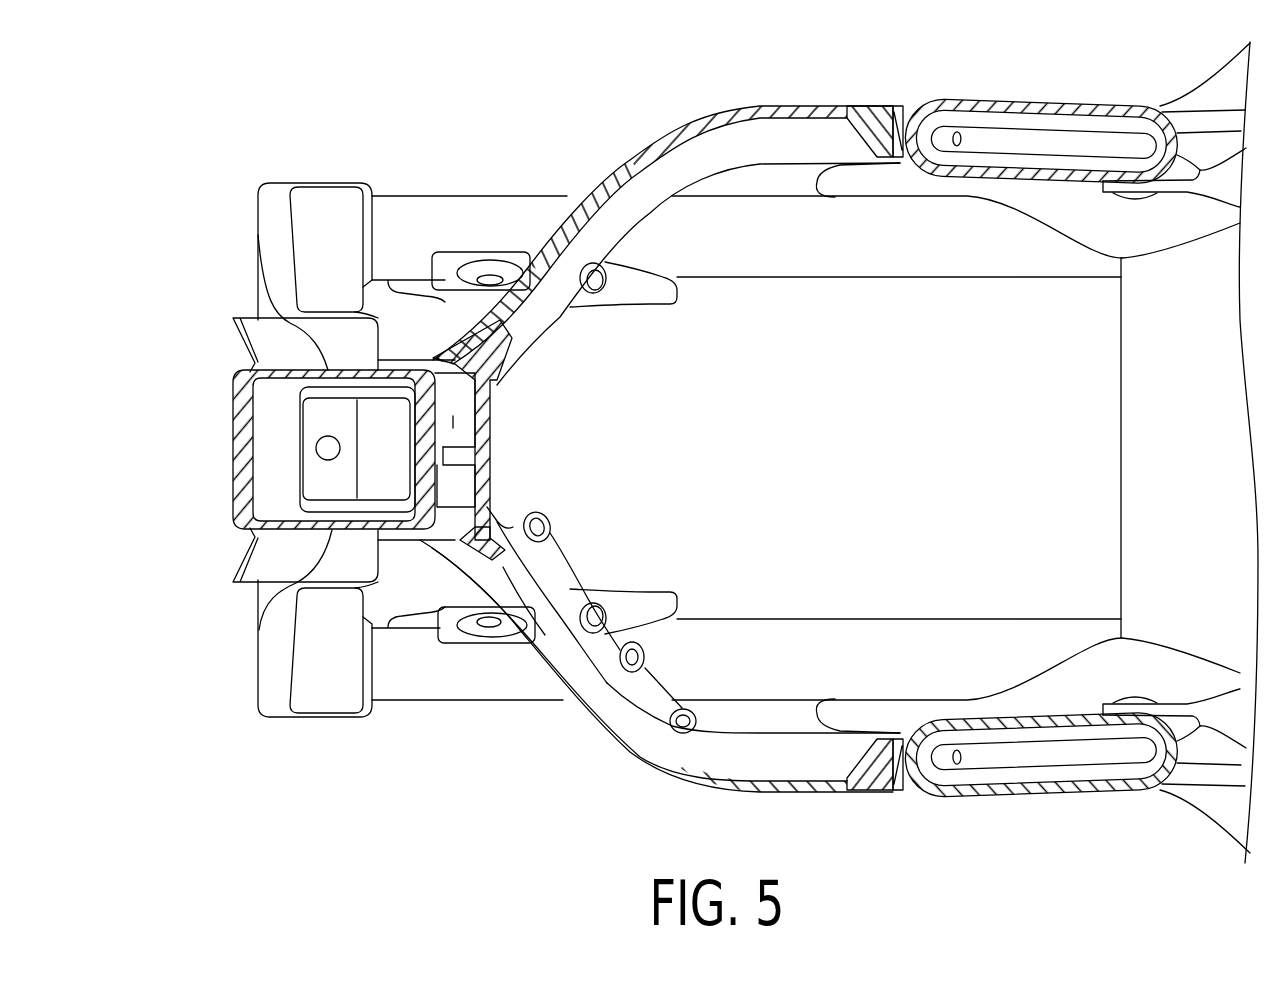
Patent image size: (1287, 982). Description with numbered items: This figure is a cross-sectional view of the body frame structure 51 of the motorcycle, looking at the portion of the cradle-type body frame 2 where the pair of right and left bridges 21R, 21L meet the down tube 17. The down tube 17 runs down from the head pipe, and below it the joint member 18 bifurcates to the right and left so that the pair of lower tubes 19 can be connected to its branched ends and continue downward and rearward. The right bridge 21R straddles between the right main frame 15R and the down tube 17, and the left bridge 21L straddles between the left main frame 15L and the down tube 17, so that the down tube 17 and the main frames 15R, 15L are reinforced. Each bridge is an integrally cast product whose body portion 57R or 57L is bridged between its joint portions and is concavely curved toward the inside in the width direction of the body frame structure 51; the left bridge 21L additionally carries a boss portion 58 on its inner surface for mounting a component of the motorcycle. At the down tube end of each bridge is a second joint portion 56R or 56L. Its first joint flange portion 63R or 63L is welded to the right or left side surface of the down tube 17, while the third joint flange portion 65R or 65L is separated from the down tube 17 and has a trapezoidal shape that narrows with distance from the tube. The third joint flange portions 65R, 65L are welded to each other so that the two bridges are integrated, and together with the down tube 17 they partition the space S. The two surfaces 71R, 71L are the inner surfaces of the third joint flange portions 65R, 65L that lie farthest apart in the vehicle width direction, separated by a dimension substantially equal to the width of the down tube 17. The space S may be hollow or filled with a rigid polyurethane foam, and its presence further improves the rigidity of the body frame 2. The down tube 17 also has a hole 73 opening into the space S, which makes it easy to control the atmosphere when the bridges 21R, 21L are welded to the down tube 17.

The body frame 2 is at (988, 80).
The right main frame 15R is at (1050, 100).
The left main frame 15L is at (1050, 798).
The down tube 17 is at (232, 410).
The joint member 18 is at (305, 182).
The lower tube 19 is at (876, 279).
The right bridge 21R is at (762, 101).
The left bridge 21L is at (763, 794).
The body frame structure 51 is at (556, 152).
The second joint portion 56R is at (453, 340).
The second joint portion 56L is at (453, 638).
The body portion 57R is at (650, 214).
The body portion 57L is at (580, 600).
The boss portion 58 is at (551, 527).
The first joint flange portion 63R is at (391, 357).
The first joint flange portion 63L is at (390, 540).
The third joint flange portion 65R is at (468, 375).
The third joint flange portion 65L is at (505, 510).
The surface 71R is at (444, 393).
The surface 71L is at (482, 498).
The hole 73 is at (485, 470).
The space S is at (456, 422).